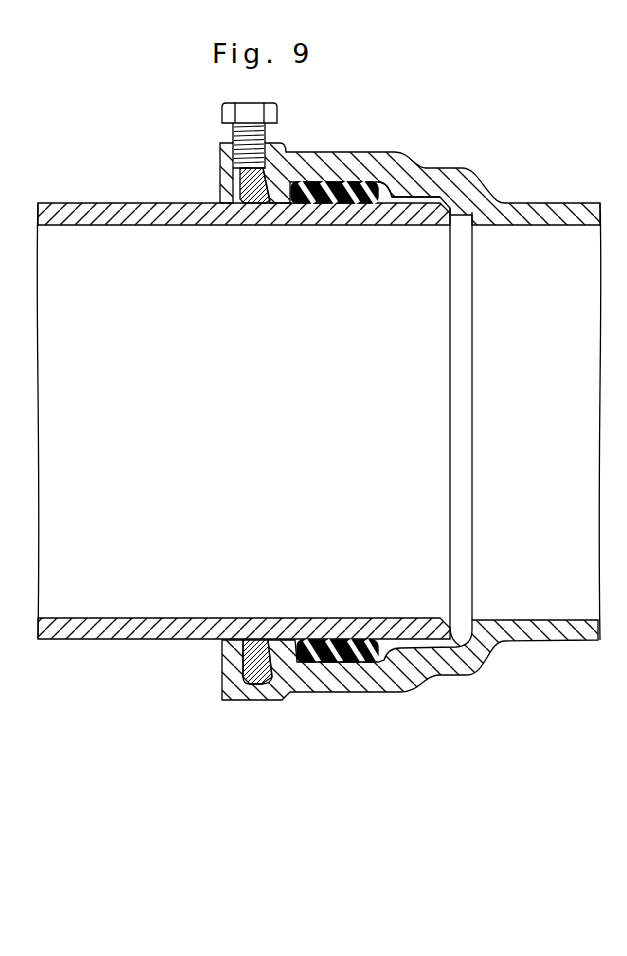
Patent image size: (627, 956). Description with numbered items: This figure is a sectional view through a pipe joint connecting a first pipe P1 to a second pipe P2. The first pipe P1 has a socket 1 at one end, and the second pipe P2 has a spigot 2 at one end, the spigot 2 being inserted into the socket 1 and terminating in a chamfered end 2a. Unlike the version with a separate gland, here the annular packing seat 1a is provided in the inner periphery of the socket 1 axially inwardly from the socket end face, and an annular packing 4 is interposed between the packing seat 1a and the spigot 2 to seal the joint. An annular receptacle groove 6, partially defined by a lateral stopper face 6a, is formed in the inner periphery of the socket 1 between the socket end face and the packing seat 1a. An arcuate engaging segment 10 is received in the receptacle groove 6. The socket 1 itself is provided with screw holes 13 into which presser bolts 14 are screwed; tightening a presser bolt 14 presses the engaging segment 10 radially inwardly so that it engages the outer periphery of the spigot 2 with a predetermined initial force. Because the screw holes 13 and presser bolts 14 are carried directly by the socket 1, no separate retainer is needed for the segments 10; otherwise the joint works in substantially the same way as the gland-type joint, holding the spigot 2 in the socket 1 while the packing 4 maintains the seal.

The socket 1 is at (420, 168).
The annular packing seat 1a is at (376, 186).
The spigot 2 is at (405, 220).
The chamfered end 2a is at (445, 208).
The annular packing 4 is at (345, 195).
The annular receptacle groove 6 is at (242, 670).
The lateral stopper face 6a is at (240, 656).
The engaging segment 10 is at (258, 190).
The screw hole 13 is at (235, 180).
The presser bolt 14 is at (248, 104).
The first pipe P1 is at (572, 222).
The second pipe P2 is at (135, 222).